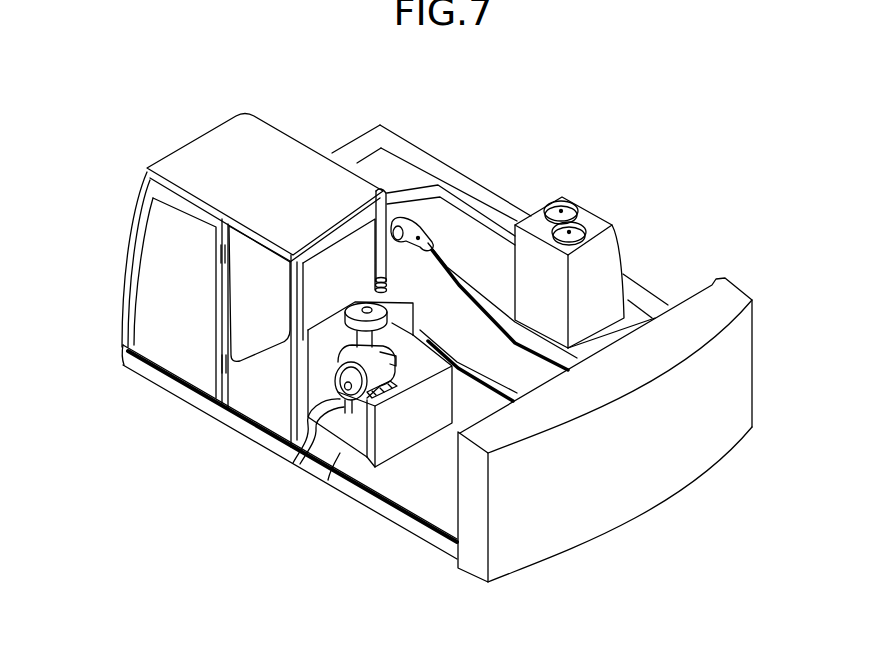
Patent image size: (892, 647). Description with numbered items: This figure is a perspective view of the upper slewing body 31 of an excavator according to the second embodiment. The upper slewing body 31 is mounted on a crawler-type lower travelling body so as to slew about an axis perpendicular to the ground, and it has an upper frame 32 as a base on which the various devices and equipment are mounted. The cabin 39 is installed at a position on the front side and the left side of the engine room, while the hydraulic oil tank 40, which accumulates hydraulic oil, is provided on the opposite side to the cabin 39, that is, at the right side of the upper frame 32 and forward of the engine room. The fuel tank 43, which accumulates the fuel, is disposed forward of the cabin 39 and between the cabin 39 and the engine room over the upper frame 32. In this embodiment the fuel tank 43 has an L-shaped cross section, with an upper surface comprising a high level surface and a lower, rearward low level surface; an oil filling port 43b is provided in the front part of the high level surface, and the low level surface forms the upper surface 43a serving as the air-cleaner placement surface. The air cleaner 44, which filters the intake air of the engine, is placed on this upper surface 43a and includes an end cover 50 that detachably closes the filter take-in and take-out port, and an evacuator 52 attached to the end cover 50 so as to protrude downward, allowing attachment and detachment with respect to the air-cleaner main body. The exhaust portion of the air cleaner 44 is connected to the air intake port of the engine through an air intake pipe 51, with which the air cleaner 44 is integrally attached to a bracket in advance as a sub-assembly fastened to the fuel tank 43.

The upper slewing body 31 is at (423, 134).
The upper frame 32 is at (472, 183).
The cabin 39 is at (274, 128).
The hydraulic oil tank 40 is at (598, 218).
The fuel tank 43 is at (340, 453).
The upper surface 43a is at (437, 357).
The oil filling port 43b is at (374, 289).
The air cleaner 44 is at (396, 384).
The end cover 50 is at (335, 388).
The air intake pipe 51 is at (414, 305).
The evacuator 52 is at (300, 455).